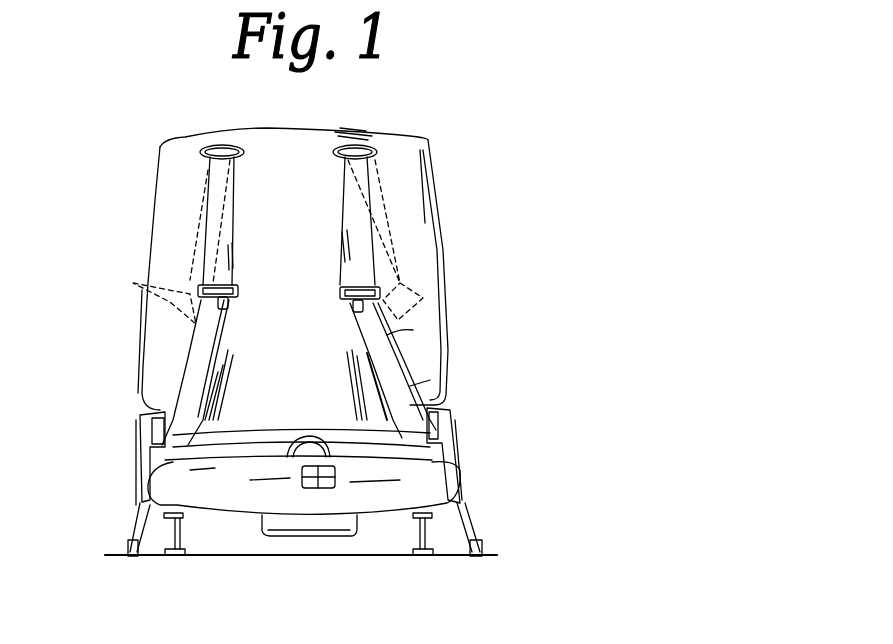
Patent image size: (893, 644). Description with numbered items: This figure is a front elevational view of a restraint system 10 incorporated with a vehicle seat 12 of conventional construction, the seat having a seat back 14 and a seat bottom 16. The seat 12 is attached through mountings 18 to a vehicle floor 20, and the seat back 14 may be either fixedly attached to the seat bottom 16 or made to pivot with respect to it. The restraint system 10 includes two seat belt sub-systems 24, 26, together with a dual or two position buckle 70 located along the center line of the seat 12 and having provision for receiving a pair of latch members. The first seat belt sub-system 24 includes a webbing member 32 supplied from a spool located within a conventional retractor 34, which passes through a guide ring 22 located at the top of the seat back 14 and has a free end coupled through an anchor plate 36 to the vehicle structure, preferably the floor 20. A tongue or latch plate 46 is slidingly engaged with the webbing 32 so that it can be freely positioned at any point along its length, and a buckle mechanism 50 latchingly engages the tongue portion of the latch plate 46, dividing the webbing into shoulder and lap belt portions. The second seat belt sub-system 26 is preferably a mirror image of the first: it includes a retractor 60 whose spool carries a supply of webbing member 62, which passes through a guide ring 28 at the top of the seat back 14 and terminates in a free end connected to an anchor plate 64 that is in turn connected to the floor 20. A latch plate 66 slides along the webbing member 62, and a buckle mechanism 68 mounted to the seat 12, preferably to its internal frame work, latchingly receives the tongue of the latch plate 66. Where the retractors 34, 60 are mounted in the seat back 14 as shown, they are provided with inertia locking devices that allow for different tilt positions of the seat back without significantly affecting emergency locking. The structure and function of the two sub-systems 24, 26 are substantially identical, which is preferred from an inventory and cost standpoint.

The restraint system 10 is at (415, 108).
The vehicle seat 12 is at (430, 142).
The seat back 14 is at (223, 195).
The seat bottom 16 is at (418, 465).
The mountings 18 is at (182, 557).
The vehicle floor 20 is at (335, 557).
The guide ring 22 is at (210, 147).
The seat belt sub-system 24 is at (253, 278).
The seat belt sub-system 26 is at (343, 278).
The guide ring 28 is at (375, 152).
The webbing member 32 is at (213, 352).
The retractor 34 is at (133, 283).
The anchor plate 36 is at (130, 543).
The latch plate 46 is at (252, 302).
The buckle mechanism 50 is at (440, 425).
The retractor 60 is at (400, 283).
The webbing member 62 is at (393, 360).
The anchor plate 64 is at (482, 545).
The latch plate 66 is at (350, 307).
The buckle mechanism 68 is at (140, 442).
The two position buckle 70 is at (302, 472).